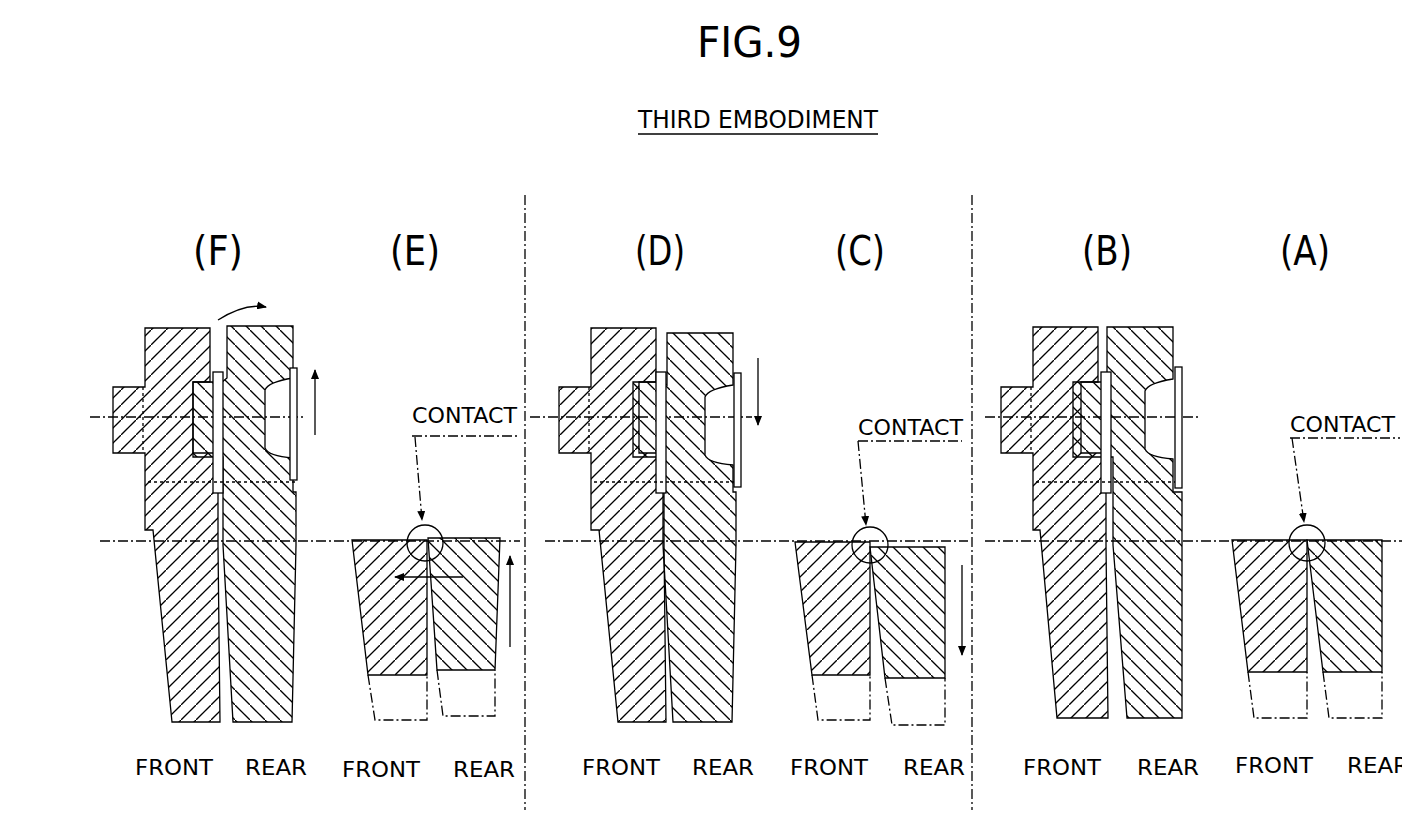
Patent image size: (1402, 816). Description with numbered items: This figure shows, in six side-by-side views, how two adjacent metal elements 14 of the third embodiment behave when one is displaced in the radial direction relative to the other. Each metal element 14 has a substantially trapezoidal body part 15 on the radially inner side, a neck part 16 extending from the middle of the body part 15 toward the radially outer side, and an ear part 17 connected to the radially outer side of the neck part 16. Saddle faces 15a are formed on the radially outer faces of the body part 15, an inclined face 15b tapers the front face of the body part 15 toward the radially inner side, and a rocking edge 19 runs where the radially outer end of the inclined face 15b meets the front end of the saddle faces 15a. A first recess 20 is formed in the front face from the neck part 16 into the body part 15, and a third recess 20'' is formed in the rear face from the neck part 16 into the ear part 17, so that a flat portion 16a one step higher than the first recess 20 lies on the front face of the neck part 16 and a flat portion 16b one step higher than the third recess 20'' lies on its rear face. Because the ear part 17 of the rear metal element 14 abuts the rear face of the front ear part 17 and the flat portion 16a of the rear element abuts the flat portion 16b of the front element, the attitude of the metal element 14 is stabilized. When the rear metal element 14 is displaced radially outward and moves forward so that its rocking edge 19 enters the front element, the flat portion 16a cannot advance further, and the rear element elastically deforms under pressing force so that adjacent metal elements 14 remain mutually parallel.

The metal element 14 is at (167, 322).
The body part 15 is at (199, 635).
The saddle face 15a is at (378, 538).
The inclined face 15b is at (153, 648).
The neck part 16 is at (196, 515).
The flat portion 16a is at (228, 536).
The flat portion 16b is at (214, 482).
The ear part 17 is at (163, 432).
The rocking edge 19 is at (220, 540).
The first recess 20 is at (599, 593).
The third recess 20'' is at (741, 427).